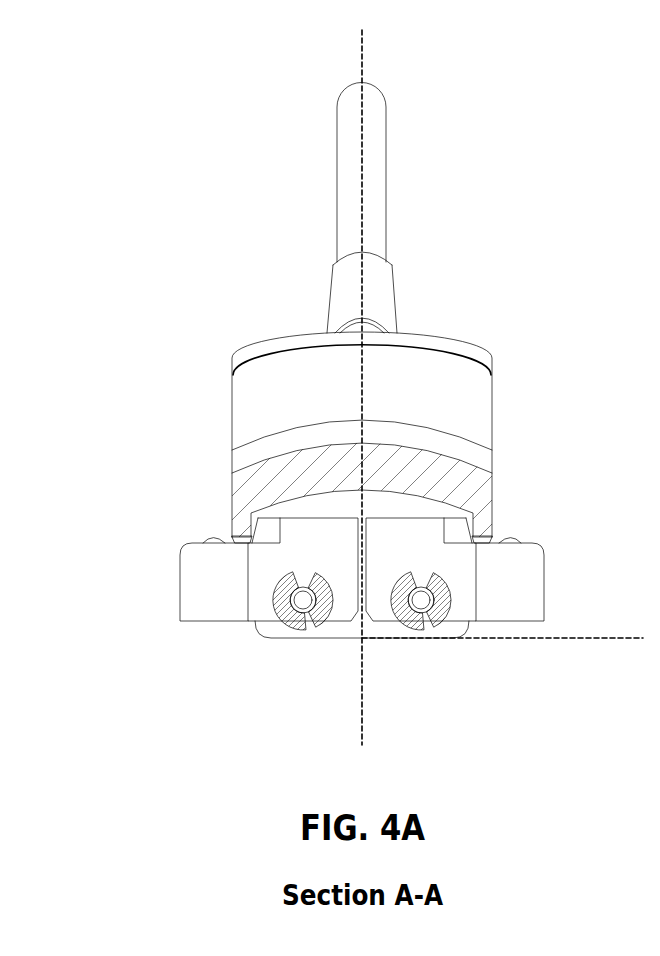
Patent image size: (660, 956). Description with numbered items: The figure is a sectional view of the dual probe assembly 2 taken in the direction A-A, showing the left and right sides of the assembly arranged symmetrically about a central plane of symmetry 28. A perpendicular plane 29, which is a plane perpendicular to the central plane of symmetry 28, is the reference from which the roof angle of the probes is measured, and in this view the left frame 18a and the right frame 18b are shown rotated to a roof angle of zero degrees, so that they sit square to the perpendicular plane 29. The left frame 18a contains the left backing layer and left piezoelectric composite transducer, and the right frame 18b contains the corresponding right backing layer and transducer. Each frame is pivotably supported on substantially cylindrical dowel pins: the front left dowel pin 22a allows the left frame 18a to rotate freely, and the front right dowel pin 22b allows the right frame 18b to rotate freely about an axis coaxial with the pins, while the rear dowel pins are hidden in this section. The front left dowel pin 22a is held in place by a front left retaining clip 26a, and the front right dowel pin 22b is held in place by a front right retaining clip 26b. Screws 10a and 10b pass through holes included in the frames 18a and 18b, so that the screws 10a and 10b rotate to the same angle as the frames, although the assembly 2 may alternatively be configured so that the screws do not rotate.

The dual probe assembly 2 is at (396, 389).
The screw 10a is at (213, 539).
The screw 10b is at (517, 541).
The left frame 18a is at (209, 598).
The right frame 18b is at (513, 610).
The front left dowel pin 22a is at (301, 601).
The front right dowel pin 22b is at (420, 602).
The front left retaining clip 26a is at (308, 626).
The front right retaining clip 26b is at (430, 627).
The central plane of symmetry 28 is at (363, 727).
The perpendicular plane 29 is at (618, 639).